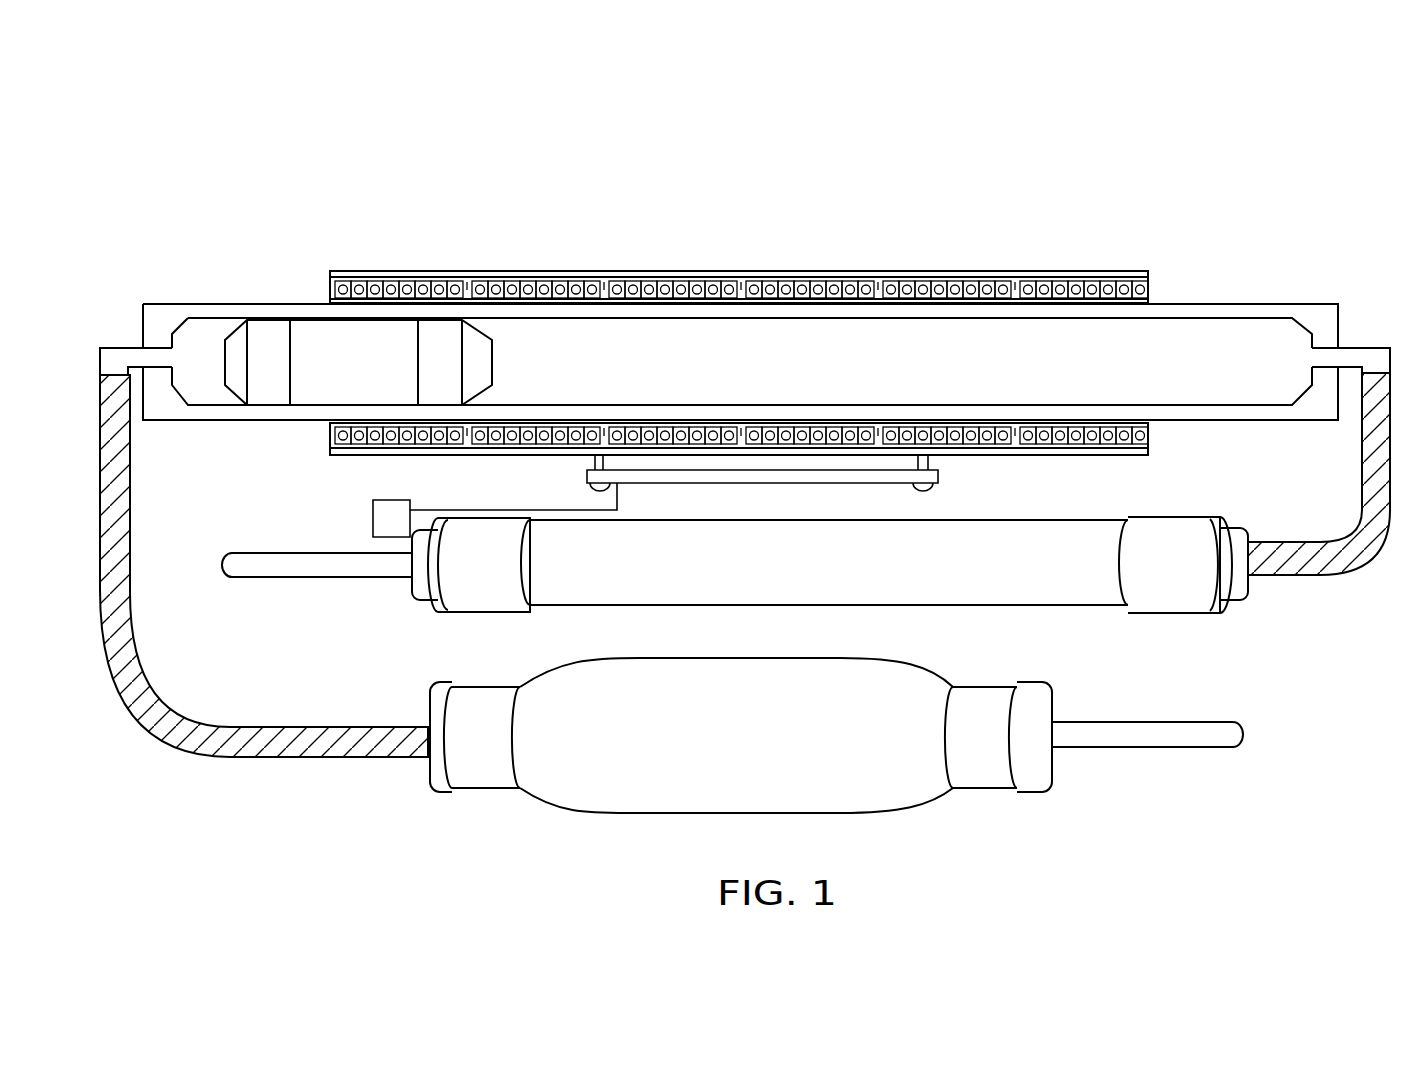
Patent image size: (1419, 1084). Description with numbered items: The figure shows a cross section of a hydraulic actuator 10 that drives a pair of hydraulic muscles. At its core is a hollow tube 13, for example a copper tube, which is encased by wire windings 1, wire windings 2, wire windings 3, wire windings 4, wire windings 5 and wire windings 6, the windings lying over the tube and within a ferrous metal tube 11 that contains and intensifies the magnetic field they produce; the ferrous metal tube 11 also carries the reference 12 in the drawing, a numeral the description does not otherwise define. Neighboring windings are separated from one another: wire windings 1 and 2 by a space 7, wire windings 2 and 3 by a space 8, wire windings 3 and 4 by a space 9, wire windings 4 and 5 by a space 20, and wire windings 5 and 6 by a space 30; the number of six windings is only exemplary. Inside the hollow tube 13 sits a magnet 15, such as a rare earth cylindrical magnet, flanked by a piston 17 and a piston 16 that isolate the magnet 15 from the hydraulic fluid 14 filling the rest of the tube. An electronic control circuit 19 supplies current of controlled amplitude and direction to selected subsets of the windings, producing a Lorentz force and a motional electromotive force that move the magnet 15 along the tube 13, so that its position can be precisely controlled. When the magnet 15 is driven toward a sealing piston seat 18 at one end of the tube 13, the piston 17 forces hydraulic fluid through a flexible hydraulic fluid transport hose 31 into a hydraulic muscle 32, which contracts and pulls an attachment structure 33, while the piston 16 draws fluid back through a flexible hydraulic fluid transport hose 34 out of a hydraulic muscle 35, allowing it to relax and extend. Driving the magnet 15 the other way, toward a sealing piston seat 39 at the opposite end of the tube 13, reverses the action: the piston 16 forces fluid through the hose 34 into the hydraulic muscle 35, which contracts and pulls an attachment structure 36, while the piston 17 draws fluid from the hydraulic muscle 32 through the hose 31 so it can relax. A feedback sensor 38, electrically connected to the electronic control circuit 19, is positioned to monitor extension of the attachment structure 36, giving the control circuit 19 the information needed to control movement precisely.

The wire windings 1 is at (1080, 270).
The wire windings 2 is at (946, 270).
The wire windings 3 is at (806, 270).
The wire windings 4 is at (675, 271).
The wire windings 5 is at (538, 269).
The wire windings 6 is at (388, 270).
The space 7 is at (1014, 278).
The space 8 is at (878, 278).
The space 9 is at (741, 278).
The hydraulic actuator 10 is at (1262, 158).
The ferrous metal tube 11 is at (343, 271).
The lower light source board 12 is at (1150, 302).
The hollow tube 13 is at (1215, 311).
The hydraulic fluid 14 is at (1141, 380).
The magnet 15 is at (341, 382).
The piston 16 is at (461, 379).
The piston 17 is at (254, 382).
The sealing piston seat 18 is at (160, 340).
The electronic control circuit 19 is at (938, 478).
The space 20 is at (605, 278).
The space 30 is at (469, 278).
The flexible hydraulic fluid transport hose 31 is at (125, 540).
The hydraulic muscle 32 is at (545, 672).
The attachment structure 33 is at (1180, 722).
The flexible hydraulic fluid transport hose 34 is at (1362, 488).
The hydraulic muscle 35 is at (800, 612).
The attachment structure 36 is at (222, 567).
The feedback sensor 38 is at (373, 528).
The sealing piston seat 39 is at (1325, 330).